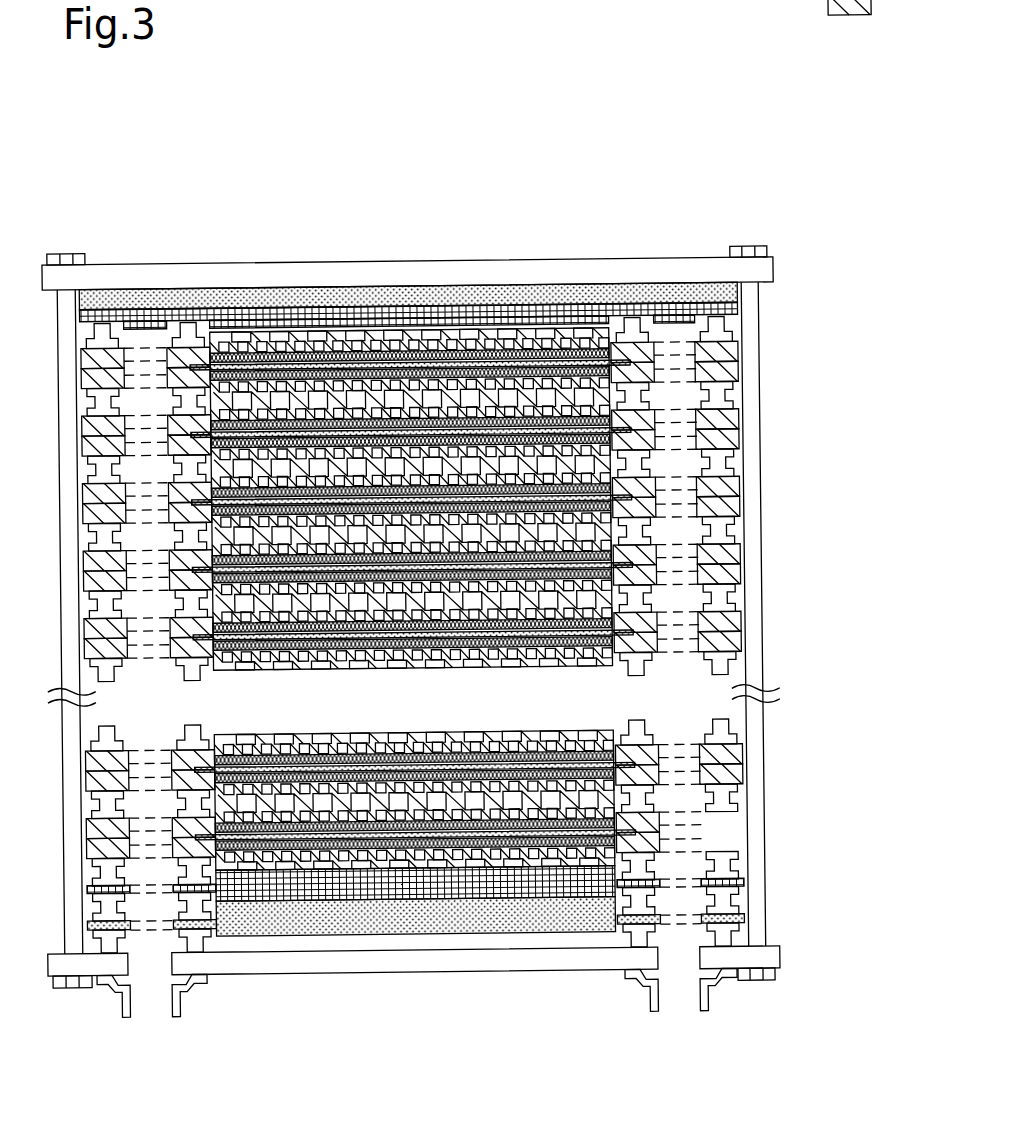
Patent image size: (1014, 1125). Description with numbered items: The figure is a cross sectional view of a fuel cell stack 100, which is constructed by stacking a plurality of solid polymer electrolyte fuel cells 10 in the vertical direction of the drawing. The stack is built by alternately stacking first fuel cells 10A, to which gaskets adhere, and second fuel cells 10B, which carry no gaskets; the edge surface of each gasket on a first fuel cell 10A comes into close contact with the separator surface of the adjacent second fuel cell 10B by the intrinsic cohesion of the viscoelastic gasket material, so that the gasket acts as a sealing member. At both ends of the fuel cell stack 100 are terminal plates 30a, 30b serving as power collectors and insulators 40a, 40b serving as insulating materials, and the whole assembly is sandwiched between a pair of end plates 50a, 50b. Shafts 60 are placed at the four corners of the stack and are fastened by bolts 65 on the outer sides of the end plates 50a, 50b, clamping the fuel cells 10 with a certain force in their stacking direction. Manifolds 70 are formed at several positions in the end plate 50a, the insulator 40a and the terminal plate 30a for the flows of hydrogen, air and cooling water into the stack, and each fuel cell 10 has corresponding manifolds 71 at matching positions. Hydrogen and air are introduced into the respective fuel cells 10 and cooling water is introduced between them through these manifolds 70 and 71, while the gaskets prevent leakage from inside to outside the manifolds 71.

The fuel cell stack 100 is at (731, 137).
The fuel cell 10 is at (479, 476).
The first fuel cell 10A is at (778, 366).
The second fuel cell 10B is at (778, 434).
The terminal plate 30a is at (305, 957).
The terminal plate 30b is at (464, 316).
The insulator 40a is at (369, 958).
The insulator 40b is at (529, 293).
The end plate 50a is at (436, 963).
The end plate 50b is at (594, 274).
The shaft 60 is at (66, 503).
The bolt 65 is at (74, 246).
The manifold 70 is at (146, 967).
The manifold 71 is at (148, 754).